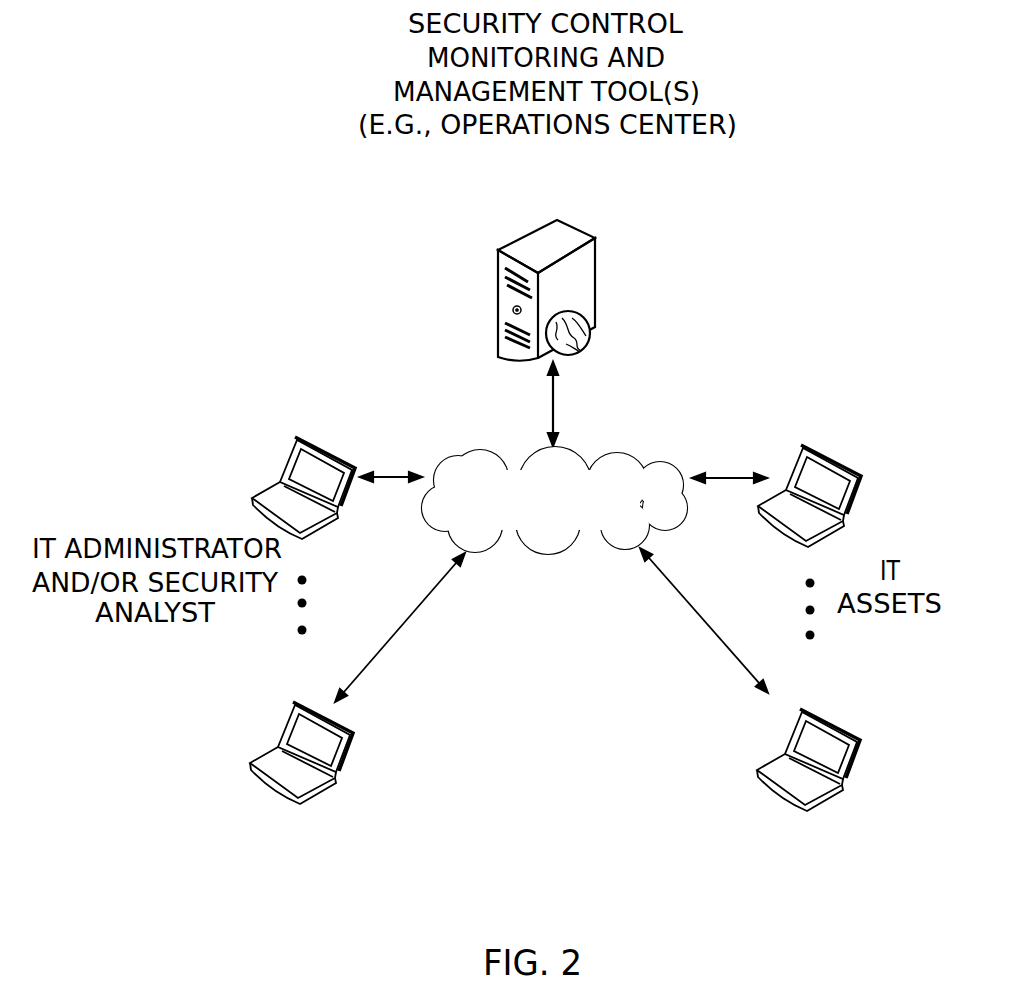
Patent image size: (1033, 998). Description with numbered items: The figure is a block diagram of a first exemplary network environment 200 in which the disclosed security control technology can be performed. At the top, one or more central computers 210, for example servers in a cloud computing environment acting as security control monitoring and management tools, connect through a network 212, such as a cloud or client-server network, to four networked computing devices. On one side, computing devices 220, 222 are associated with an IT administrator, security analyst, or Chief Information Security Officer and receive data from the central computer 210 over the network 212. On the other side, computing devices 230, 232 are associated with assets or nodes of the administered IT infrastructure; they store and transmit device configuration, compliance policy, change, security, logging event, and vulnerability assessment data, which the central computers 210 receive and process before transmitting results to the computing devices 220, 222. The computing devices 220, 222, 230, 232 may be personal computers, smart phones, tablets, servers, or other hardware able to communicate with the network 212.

The network environment 200 is at (263, 130).
The central computer 210 is at (557, 233).
The network 212 is at (554, 500).
The computing device 220 is at (300, 440).
The computing device 222 is at (298, 705).
The computing device 230 is at (806, 448).
The computing device 232 is at (805, 712).